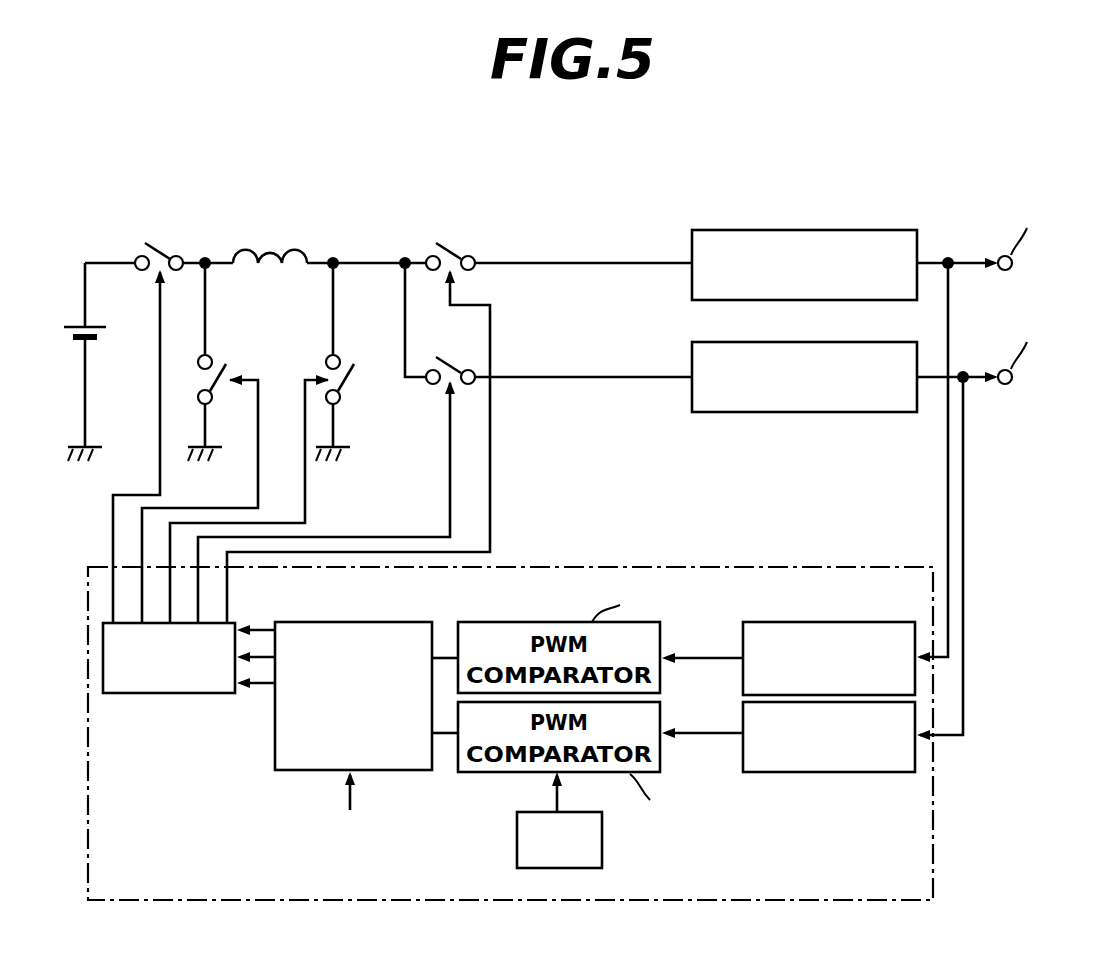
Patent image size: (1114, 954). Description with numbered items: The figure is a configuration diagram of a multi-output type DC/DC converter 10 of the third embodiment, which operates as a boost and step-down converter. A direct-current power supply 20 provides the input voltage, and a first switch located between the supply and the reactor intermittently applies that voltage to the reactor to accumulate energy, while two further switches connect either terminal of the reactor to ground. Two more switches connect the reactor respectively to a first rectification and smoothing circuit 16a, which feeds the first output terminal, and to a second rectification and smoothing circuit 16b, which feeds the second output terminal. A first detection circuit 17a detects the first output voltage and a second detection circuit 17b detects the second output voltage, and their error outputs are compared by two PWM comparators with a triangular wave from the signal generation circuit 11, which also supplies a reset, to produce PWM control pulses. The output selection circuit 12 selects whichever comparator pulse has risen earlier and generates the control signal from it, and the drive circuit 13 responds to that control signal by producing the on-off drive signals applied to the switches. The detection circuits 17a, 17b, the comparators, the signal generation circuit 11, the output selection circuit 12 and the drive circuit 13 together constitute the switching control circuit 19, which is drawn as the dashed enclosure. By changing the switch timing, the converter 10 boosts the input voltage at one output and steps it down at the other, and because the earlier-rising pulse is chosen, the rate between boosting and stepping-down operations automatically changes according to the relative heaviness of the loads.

The multi-output type DC/DC converter 10 is at (622, 190).
The signal generation circuit 11 is at (602, 838).
The output selection circuit 12 is at (275, 752).
The drive circuit 13 is at (130, 697).
The first rectification & smoothing circuit 16a is at (840, 230).
The second rectification & smoothing circuit 16b is at (852, 412).
The first detection circuit 17a is at (832, 622).
The second detection circuit 17b is at (835, 775).
The switching control circuit 19 is at (933, 810).
The direct-current power supply 20 is at (68, 345).